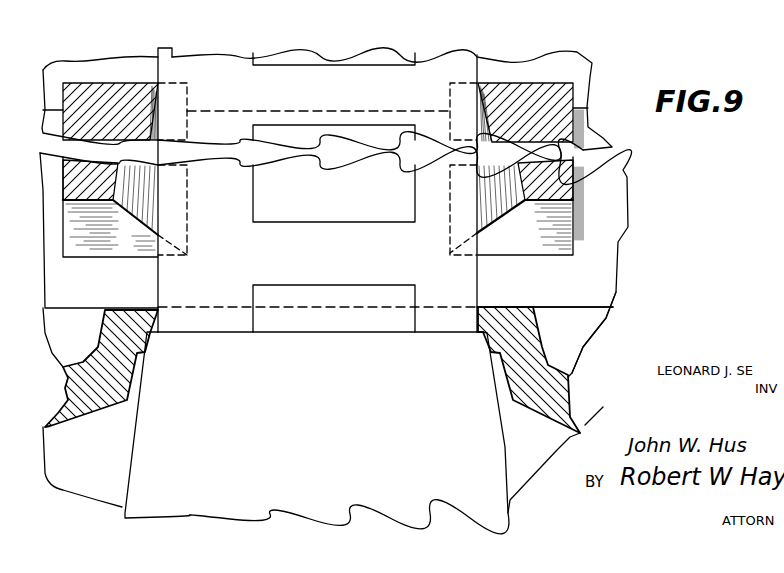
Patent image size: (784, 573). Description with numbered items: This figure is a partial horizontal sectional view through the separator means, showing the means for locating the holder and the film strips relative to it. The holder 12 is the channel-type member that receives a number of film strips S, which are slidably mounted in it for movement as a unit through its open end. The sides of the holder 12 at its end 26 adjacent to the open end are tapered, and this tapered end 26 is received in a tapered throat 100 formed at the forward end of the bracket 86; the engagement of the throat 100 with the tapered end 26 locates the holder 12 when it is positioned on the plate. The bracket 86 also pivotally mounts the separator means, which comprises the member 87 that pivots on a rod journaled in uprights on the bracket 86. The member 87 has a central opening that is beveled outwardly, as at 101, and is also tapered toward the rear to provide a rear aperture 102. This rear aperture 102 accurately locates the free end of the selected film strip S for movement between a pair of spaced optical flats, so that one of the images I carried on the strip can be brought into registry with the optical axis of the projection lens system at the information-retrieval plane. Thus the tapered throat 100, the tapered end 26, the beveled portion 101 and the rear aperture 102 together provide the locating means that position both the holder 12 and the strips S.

The film strips S is at (183, 293).
The images I is at (352, 213).
The rear aperture 102 is at (160, 82).
The member 87 is at (530, 87).
The beveled portion of opening 101 is at (135, 222).
The tapered throat 100 is at (161, 332).
The holder 12 is at (324, 456).
The tapered end 26 is at (133, 423).
The bracket 86 is at (532, 333).